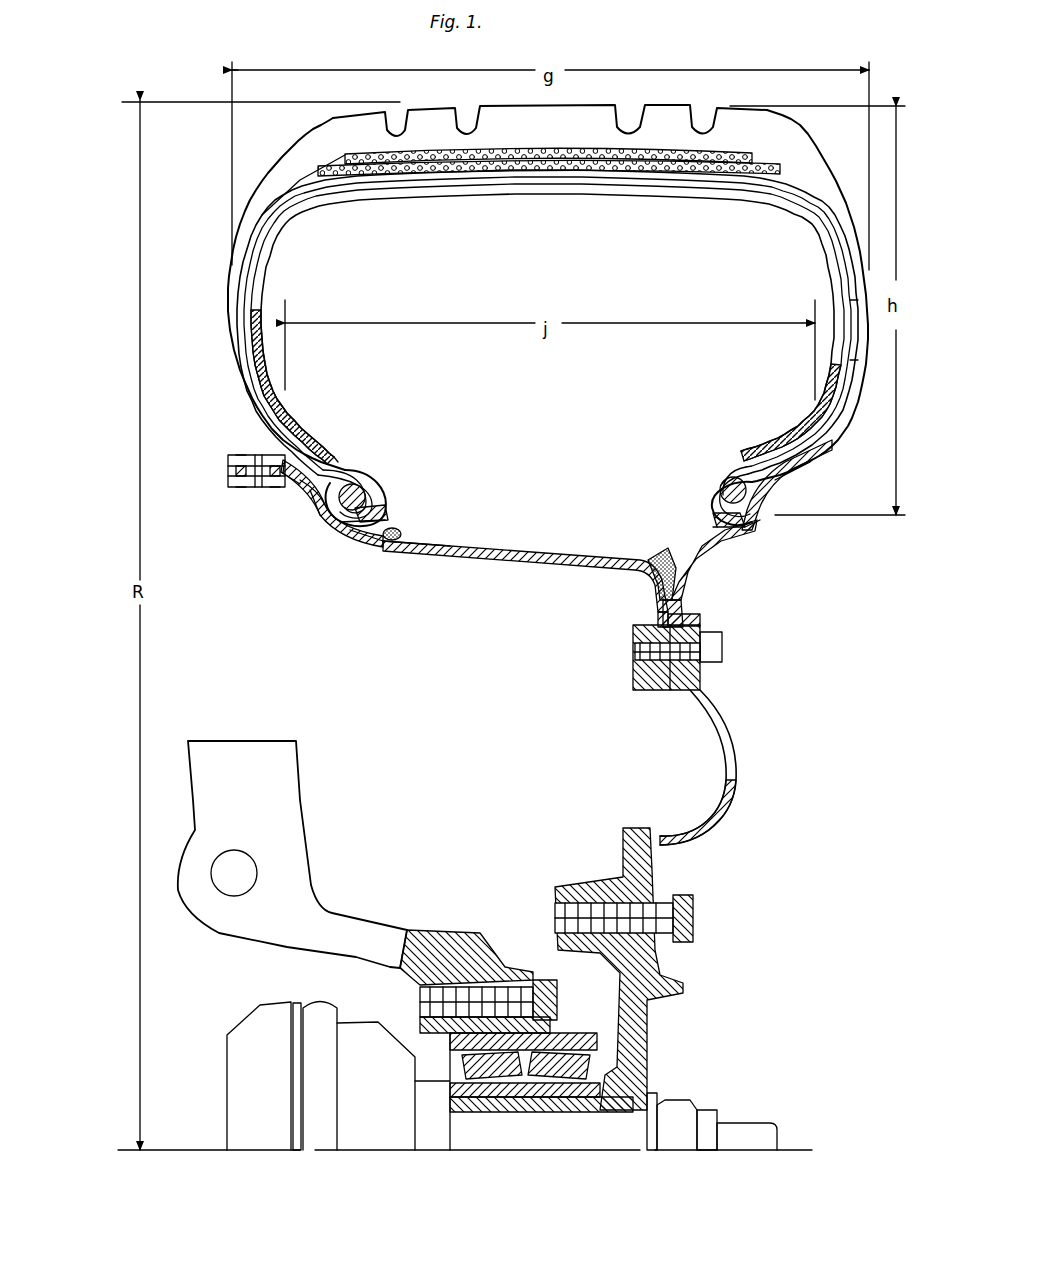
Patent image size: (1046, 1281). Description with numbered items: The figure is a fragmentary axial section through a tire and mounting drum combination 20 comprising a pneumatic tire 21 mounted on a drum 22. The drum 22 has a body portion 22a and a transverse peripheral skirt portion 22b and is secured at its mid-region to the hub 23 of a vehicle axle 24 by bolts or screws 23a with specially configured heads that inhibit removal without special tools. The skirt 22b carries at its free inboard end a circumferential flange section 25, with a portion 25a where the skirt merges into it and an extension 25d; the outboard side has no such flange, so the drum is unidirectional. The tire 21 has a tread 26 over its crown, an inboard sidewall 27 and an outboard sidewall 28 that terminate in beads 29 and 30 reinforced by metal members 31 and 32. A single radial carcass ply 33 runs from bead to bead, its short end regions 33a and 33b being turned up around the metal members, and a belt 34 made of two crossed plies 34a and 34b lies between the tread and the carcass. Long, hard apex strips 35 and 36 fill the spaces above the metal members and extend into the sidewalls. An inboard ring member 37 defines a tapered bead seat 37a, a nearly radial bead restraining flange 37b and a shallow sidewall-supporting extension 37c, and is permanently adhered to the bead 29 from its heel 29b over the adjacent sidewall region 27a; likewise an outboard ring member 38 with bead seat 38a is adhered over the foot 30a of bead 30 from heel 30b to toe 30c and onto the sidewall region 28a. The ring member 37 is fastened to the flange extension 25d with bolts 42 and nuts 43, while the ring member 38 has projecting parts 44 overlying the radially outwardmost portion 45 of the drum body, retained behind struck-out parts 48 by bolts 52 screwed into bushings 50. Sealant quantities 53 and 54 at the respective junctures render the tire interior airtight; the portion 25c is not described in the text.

The tire and mounting drum combination 20 is at (803, 610).
The pneumatic tire 21 is at (843, 190).
The drum 22 is at (731, 778).
The body portion 22a is at (733, 800).
The skirt portion 22b is at (547, 548).
The hub 23 is at (648, 1033).
The bolts or screws 23a is at (693, 915).
The vehicle axle 24 is at (630, 1130).
The flange section 25 is at (337, 550).
The flange section portion 25a is at (392, 547).
The rim flange inclined portion 25c is at (307, 477).
The flange section extension 25d is at (227, 468).
The tread 26 is at (692, 110).
The inboard sidewall 27 is at (228, 282).
The inboard sidewall region 27a is at (293, 503).
The outboard sidewall 28 is at (860, 374).
The outboard sidewall region 28a is at (780, 480).
The inboard bead 29 is at (380, 487).
The bead heel 29b is at (383, 515).
The outboard bead 30 is at (710, 488).
The bead foot 30a is at (720, 528).
The bead heel 30b is at (712, 513).
The bead toe 30c is at (767, 520).
The metal member 31 is at (383, 498).
The metal member 32 is at (743, 517).
The carcass ply 33 is at (300, 210).
The ply turn-up 33a is at (337, 467).
The ply turn-up 33b is at (773, 437).
The tread-reinforcing belt 34 is at (580, 164).
The belt ply 34a is at (565, 148).
The belt ply 34b is at (560, 177).
The apex strip 35 is at (307, 447).
The apex strip 36 is at (800, 433).
The inboard ring member 37 is at (222, 455).
The bead seat 37a is at (363, 540).
The bead restraining flange 37b is at (317, 498).
The sidewall-supporting extension 37c is at (270, 495).
The outboard ring member 38 is at (820, 472).
The bead seat 38a is at (733, 527).
The bolt 42 is at (257, 450).
The nut 43 is at (238, 487).
The projecting part 44 is at (677, 597).
The radially outwardmost portion 45 is at (663, 608).
The struck-out part 48 is at (700, 617).
The bushing 50 is at (643, 687).
The bolt 52 is at (720, 660).
The sealant 53 is at (400, 533).
The sealant 54 is at (660, 552).